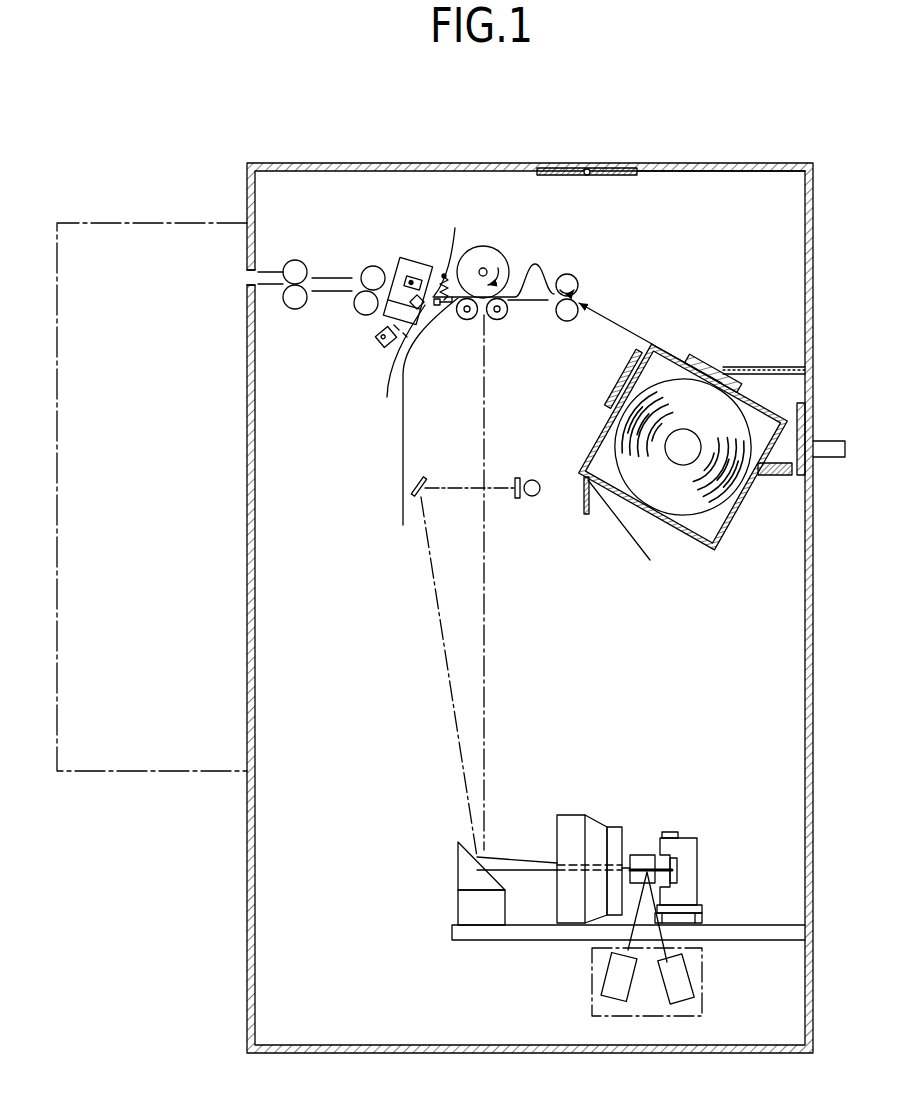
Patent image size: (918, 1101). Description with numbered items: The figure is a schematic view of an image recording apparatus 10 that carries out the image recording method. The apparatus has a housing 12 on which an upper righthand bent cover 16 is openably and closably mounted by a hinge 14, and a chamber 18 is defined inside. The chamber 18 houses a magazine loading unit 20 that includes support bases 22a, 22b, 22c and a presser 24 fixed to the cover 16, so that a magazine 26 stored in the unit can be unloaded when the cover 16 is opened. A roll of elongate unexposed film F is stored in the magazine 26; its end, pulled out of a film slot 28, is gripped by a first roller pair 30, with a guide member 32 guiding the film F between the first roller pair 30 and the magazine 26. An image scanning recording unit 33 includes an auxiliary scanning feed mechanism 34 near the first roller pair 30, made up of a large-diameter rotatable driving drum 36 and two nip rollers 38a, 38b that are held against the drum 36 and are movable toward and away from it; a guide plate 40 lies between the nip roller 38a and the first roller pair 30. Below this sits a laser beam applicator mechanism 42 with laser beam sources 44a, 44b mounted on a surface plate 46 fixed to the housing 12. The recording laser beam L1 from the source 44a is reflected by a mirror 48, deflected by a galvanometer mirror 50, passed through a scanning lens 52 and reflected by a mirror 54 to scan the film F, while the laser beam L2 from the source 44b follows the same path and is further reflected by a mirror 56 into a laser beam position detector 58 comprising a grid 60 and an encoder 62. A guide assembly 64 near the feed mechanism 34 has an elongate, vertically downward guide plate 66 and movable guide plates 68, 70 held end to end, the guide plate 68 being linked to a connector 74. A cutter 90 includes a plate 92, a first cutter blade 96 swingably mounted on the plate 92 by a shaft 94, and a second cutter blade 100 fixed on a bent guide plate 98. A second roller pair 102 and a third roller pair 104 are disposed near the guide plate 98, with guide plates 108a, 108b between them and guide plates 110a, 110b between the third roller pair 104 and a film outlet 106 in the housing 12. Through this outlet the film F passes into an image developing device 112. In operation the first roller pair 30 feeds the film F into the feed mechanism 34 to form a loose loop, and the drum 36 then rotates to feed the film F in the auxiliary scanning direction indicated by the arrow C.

The image recording apparatus 10 is at (487, 142).
The housing 12 is at (246, 921).
The hinge 14 is at (604, 168).
The cover 16 is at (693, 163).
The chamber 18 is at (716, 238).
The magazine loading unit 20 is at (707, 457).
The support base 22a is at (683, 447).
The support base 22b is at (589, 506).
The support base 22c is at (624, 378).
The presser 24 is at (713, 373).
The magazine 26 is at (664, 521).
The film slot 28 is at (650, 340).
The first roller pair 30 is at (575, 275).
The guide member 32 is at (598, 320).
The image scanning recording unit 33 is at (378, 522).
The auxiliary scanning feed mechanism 34 is at (493, 284).
The driving drum 36 is at (494, 256).
The nip roller 38a is at (498, 320).
The nip roller 38b is at (468, 320).
The guide plate 40 is at (543, 305).
The laser beam applicator mechanism 42 is at (634, 824).
The laser beam source 44a is at (605, 978).
The laser beam source 44b is at (690, 985).
The surface plate 46 is at (455, 929).
The mirror 48 is at (643, 855).
The galvanometer mirror 50 is at (680, 846).
The scanning lens 52 is at (574, 815).
The mirror 54 is at (465, 868).
The mirror 56 is at (415, 497).
The laser beam position detector 58 is at (532, 492).
The grid 60 is at (517, 477).
The encoder 62 is at (535, 479).
The guide assembly 64 is at (461, 224).
The guide plate 66 is at (405, 440).
The movable guide plate 68 is at (387, 397).
The movable guide plate 70 is at (446, 272).
The connector 74 is at (394, 325).
The cutter 90 is at (398, 297).
The plate 92 is at (424, 265).
The shaft 94 is at (414, 277).
The first cutter blade 96 is at (402, 259).
The bent guide plate 98 is at (378, 338).
The second cutter blade 100 is at (403, 333).
The second roller pair 102 is at (372, 265).
The third roller pair 104 is at (296, 259).
The film outlet 106 is at (246, 282).
The guide plate 108a is at (323, 292).
The guide plate 108b is at (330, 277).
The guide plate 110a is at (277, 286).
The guide plate 110b is at (274, 270).
The image developing device 112 is at (150, 222).
The auxiliary scanning direction C is at (536, 313).
The film F is at (682, 446).
The recording laser beam L1 is at (513, 582).
The laser beam L2 is at (432, 677).